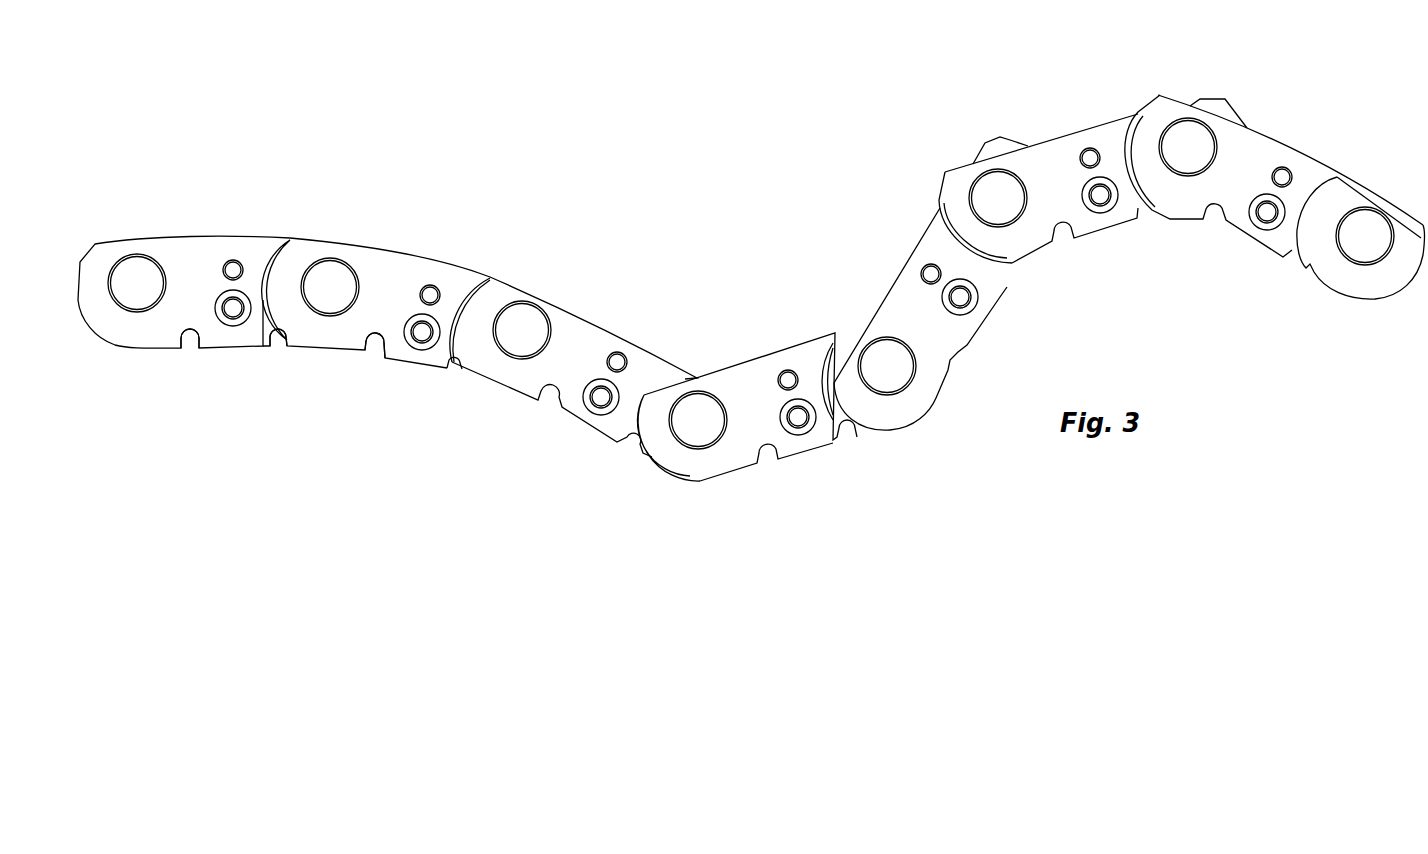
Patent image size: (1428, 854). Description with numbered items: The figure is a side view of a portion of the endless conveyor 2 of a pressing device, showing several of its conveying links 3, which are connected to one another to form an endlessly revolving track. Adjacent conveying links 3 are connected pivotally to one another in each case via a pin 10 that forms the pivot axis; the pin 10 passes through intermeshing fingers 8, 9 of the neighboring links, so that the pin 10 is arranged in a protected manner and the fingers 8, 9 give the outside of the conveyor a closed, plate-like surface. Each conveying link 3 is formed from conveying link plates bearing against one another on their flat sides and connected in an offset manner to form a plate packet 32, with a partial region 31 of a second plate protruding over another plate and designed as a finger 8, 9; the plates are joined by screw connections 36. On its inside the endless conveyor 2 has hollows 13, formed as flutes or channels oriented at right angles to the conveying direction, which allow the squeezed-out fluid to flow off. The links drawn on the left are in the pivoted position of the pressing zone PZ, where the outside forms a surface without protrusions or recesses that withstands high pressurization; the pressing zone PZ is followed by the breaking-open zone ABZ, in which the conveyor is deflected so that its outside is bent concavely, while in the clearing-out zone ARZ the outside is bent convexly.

The endless conveyor 2 is at (751, 263).
The conveying link 3 is at (415, 272).
The finger 8 is at (1157, 105).
The finger 9 is at (1397, 280).
The pin 10 is at (142, 268).
The hollow 13 is at (194, 354).
The partial region 31 is at (1361, 275).
The plate packet 32 is at (1075, 130).
The screw connection 36 is at (1086, 161).
The pressing zone PZ is at (420, 186).
The breaking-open zone ABZ is at (875, 466).
The clearing-out zone ARZ is at (1186, 80).